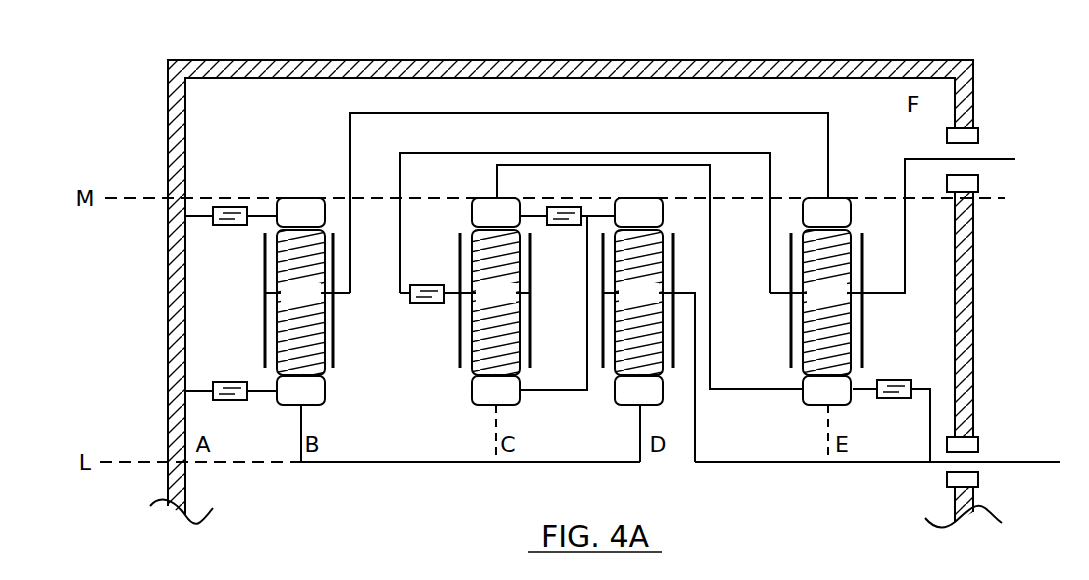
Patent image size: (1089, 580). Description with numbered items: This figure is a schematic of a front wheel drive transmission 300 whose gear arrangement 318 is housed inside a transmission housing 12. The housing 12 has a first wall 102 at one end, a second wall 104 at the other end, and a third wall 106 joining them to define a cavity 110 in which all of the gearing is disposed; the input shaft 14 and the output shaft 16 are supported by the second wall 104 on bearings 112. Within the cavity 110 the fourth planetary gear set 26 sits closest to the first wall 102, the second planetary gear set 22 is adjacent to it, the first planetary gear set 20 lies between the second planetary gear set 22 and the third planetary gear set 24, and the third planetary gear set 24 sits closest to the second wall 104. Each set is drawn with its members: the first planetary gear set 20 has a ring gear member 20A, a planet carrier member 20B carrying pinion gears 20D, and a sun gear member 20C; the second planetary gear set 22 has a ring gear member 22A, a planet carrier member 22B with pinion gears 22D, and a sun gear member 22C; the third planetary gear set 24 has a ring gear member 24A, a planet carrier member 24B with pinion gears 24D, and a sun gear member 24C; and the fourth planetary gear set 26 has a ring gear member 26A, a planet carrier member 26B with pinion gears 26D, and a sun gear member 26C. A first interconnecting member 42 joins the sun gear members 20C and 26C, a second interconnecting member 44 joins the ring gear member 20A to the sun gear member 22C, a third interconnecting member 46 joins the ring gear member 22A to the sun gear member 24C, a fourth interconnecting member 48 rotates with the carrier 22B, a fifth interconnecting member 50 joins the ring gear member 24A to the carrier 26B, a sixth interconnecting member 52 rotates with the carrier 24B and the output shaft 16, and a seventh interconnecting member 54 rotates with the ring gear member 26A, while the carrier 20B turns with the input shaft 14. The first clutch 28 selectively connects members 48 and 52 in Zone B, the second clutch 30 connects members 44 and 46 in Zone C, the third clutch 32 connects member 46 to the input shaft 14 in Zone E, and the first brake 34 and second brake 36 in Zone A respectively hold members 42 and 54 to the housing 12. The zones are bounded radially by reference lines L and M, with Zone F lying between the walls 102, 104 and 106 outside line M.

The transmission housing 12 is at (884, 55).
The input shaft or member 14 is at (1000, 462).
The output shaft or member 16 is at (1000, 159).
The first planetary gear set 20 is at (605, 261).
The ring gear member 20A is at (639, 212).
The planet carrier member 20B is at (601, 362).
The sun gear member 20C is at (639, 390).
The planet or pinion gears 20D is at (639, 302).
The second planetary gear set 22 is at (464, 261).
The ring gear member 22A is at (496, 212).
The planet carrier member 22B is at (460, 366).
The sun gear member 22C is at (496, 390).
The planet or pinion gears 22D is at (496, 302).
The third planetary gear set 24 is at (815, 263).
The ring gear member 24A is at (827, 212).
The planet carrier member 24B is at (791, 360).
The sun gear member 24C is at (827, 390).
The planet or pinion gears 24D is at (827, 302).
The fourth planetary gear set 26 is at (330, 261).
The ring gear member 26A is at (301, 212).
The planet carrier member 26B is at (334, 324).
The sun gear member 26C is at (301, 390).
The planet or pinion gears 26D is at (301, 302).
The first clutch 28 is at (440, 285).
The second clutch 30 is at (572, 226).
The third clutch 32 is at (886, 380).
The first brake 34 is at (224, 382).
The second brake 36 is at (236, 226).
The first shaft or interconnecting member 42 is at (256, 392).
The second shaft or interconnecting member 44 is at (587, 318).
The third shaft or interconnecting member 46 is at (572, 165).
The fourth shaft or interconnecting member 48 is at (452, 296).
The fifth shaft or interconnecting member 50 is at (437, 113).
The sixth shaft or interconnecting member 52 is at (498, 153).
The seventh shaft or interconnecting member 54 is at (265, 214).
The first wall or structural member 102 is at (168, 300).
The second wall or structural member 104 is at (975, 290).
The third wall or structural member 106 is at (382, 60).
The space or cavity 110 is at (445, 78).
The bearings 112 is at (982, 128).
The transmission 300 is at (815, 52).
The gear arrangement 318 is at (646, 95).